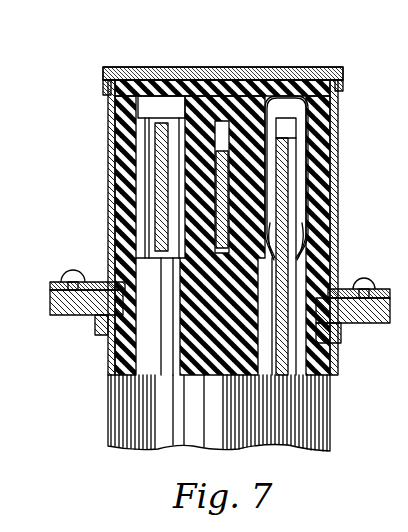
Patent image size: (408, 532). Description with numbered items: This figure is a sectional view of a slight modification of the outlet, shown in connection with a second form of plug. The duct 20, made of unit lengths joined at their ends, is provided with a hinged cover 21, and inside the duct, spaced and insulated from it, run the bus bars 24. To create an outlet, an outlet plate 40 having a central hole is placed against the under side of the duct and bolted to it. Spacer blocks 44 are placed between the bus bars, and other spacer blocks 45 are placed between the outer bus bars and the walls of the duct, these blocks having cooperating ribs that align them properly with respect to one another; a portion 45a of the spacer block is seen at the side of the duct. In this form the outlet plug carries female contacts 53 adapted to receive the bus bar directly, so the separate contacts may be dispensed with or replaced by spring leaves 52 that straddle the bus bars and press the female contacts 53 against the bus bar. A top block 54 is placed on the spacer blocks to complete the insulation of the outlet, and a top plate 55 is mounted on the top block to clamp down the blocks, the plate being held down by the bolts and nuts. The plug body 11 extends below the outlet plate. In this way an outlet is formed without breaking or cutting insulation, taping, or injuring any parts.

The casing 11 is at (182, 386).
The duct 20 is at (331, 168).
The hinged cover 21 is at (247, 63).
The bus bars 24 is at (146, 207).
The outlet plate 40 is at (47, 276).
The spacer blocks 44 is at (237, 62).
The spacer blocks 45 is at (98, 184).
The sleeve lip 45a is at (296, 339).
The spring leaves 52 is at (332, 123).
The female contacts 53 is at (293, 279).
The top block 54 is at (288, 70).
The top plate 55 is at (178, 60).